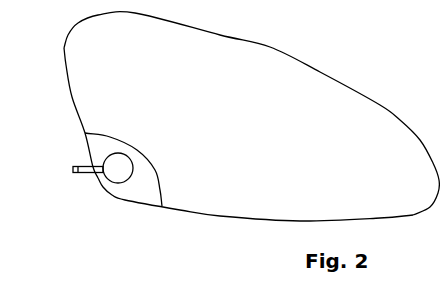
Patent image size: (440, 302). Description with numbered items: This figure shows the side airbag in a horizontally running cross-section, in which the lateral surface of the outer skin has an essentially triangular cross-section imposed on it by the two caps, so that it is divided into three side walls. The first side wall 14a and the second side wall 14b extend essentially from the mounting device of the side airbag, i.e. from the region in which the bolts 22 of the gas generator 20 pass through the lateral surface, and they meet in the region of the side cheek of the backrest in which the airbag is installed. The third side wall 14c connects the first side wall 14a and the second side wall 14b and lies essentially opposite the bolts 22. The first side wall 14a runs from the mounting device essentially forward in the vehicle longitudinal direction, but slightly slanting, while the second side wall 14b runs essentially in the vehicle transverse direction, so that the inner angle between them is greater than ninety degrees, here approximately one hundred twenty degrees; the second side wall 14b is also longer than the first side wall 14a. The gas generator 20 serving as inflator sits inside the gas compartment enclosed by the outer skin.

The first side wall 14a is at (72, 97).
The second side wall 14b is at (264, 219).
The third side wall 14c is at (277, 49).
The gas generator 20 is at (118, 173).
The bolts 22 is at (82, 174).